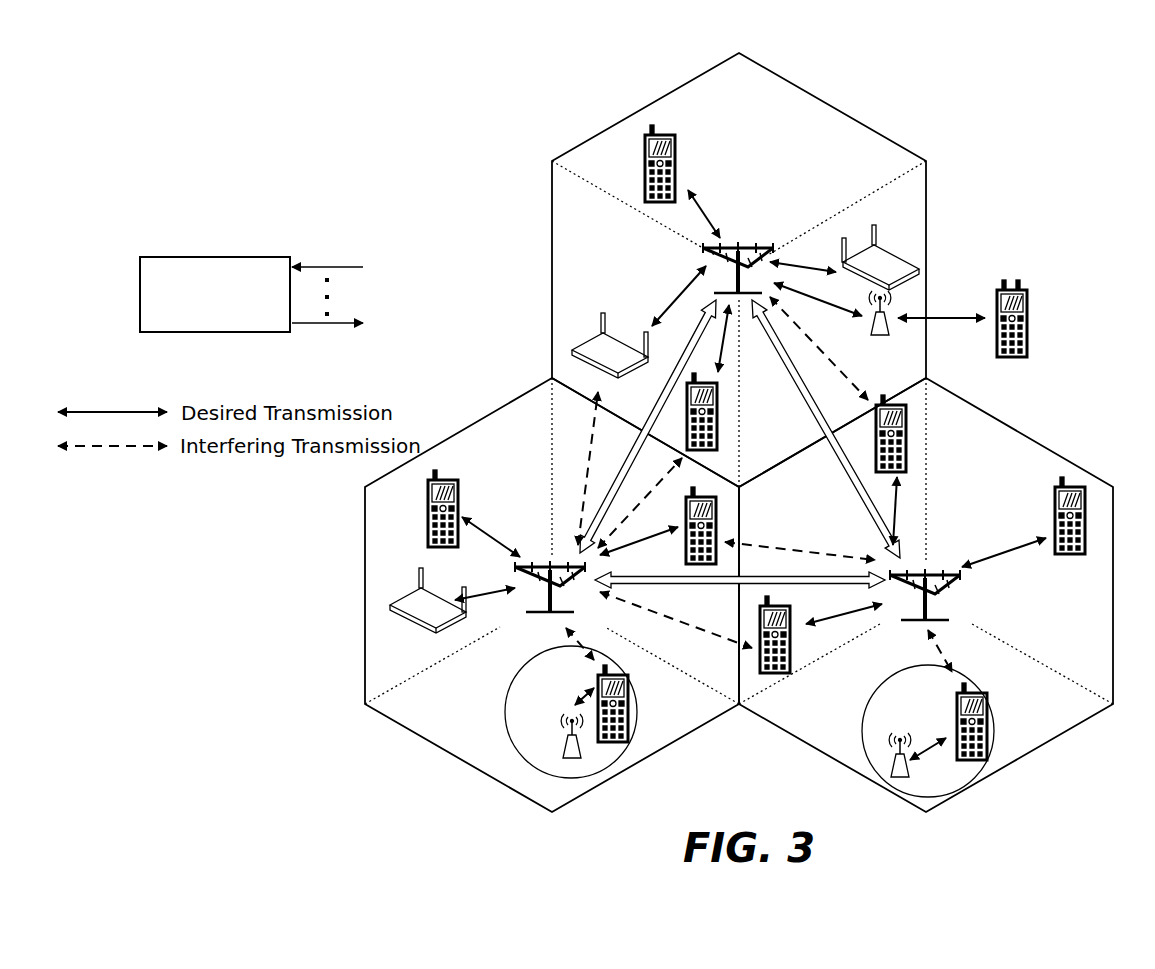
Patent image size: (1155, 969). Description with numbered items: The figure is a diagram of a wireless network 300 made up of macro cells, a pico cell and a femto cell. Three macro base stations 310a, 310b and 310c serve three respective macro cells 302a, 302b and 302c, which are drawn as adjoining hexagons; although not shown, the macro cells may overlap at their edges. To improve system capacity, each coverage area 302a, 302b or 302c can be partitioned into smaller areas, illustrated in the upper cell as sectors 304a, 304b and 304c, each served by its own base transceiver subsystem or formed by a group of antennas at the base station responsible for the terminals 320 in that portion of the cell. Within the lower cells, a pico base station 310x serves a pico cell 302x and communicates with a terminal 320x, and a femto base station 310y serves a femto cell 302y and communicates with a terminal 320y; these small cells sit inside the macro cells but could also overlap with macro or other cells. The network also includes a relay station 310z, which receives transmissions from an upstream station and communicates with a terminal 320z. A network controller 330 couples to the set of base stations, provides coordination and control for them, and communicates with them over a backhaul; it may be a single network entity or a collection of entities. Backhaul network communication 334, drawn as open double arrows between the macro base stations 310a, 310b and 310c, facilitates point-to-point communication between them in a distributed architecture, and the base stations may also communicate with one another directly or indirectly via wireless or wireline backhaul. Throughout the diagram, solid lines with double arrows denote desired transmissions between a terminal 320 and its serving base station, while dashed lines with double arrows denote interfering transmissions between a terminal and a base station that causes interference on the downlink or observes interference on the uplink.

The wireless network 300 is at (262, 95).
The macro cell 302a is at (783, 78).
The macro cell 302b is at (487, 415).
The macro cell 302c is at (996, 417).
The pico cell 302x is at (545, 658).
The femto cell 302y is at (872, 686).
The sector 304a is at (731, 95).
The sector 304b is at (588, 231).
The sector 304c is at (906, 201).
The macro base station 310a is at (750, 248).
The macro base station 310b is at (550, 566).
The macro base station 310c is at (937, 575).
The pico base station 310x is at (580, 757).
The femto base station 310y is at (910, 774).
The relay station 310z is at (889, 332).
The terminal 320 is at (645, 146).
The terminal 320x is at (628, 695).
The terminal 320y is at (986, 710).
The terminal 320z is at (1028, 300).
The network controller 330 is at (298, 295).
The backhaul network communication 334 is at (640, 434).